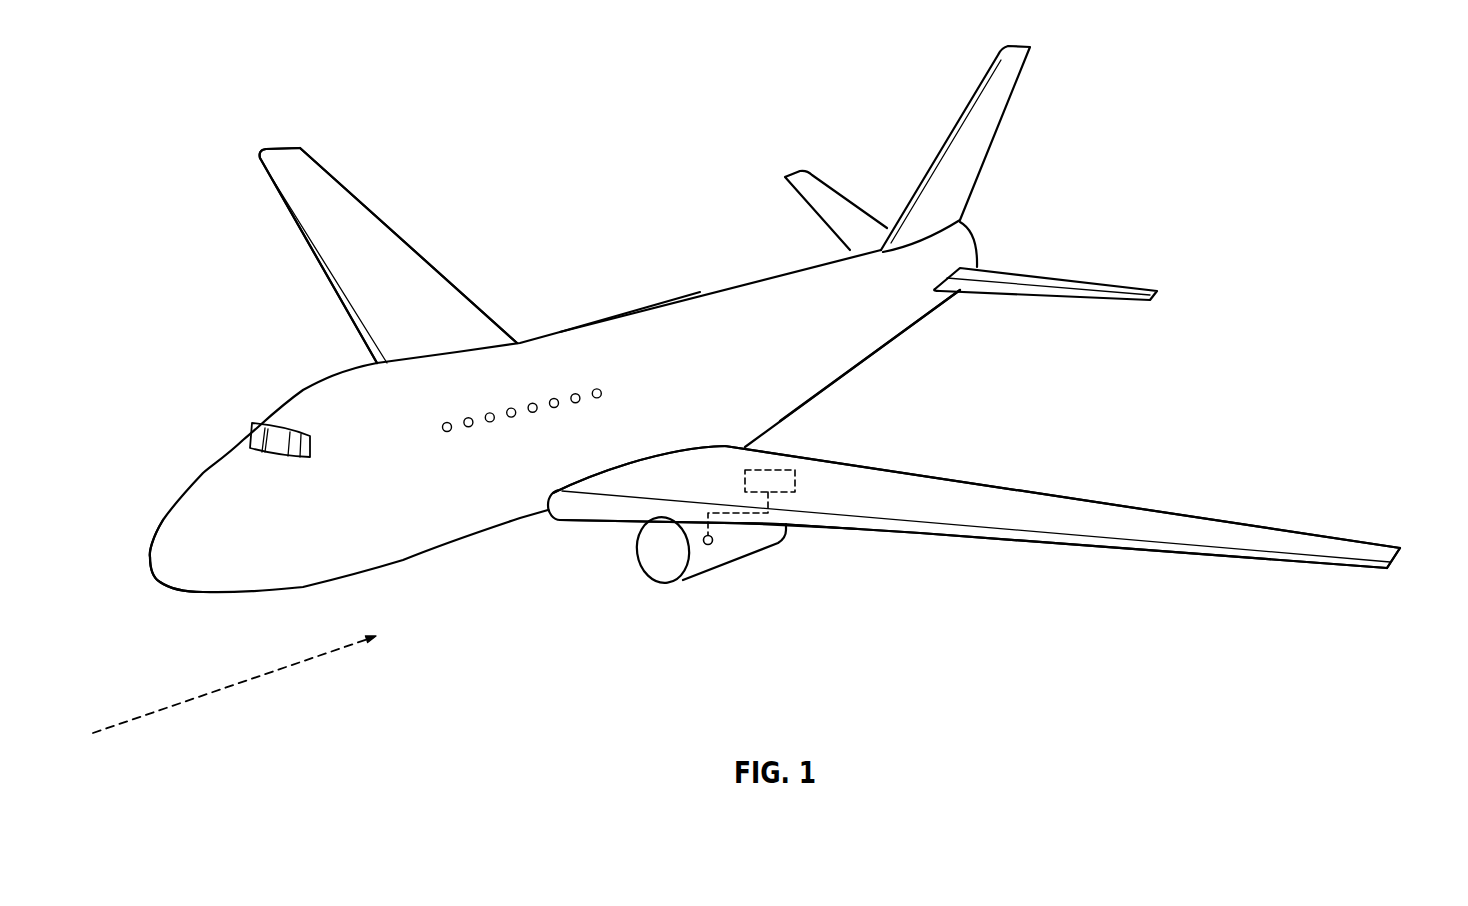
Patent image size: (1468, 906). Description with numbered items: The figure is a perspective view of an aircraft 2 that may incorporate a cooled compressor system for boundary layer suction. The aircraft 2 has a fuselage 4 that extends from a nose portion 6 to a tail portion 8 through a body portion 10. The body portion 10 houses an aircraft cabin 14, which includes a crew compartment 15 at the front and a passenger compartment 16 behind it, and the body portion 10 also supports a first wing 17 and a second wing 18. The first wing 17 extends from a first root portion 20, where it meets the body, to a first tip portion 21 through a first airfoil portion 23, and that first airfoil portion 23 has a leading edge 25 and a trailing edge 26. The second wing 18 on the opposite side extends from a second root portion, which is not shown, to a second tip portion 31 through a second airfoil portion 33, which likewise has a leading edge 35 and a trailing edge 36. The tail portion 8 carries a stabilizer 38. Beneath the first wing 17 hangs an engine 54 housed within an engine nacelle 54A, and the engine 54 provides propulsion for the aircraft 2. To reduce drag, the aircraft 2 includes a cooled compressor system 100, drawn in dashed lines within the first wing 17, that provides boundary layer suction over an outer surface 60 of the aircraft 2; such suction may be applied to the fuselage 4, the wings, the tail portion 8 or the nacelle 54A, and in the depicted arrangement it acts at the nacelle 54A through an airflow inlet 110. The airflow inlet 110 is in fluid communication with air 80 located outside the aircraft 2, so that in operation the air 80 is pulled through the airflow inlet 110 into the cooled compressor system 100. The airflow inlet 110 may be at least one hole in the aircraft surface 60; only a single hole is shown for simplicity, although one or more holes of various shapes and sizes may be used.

The aircraft 2 is at (776, 370).
The fuselage 4 is at (318, 565).
The nose portion 6 is at (160, 563).
The tail portion 8 is at (971, 200).
The body portion 10 is at (788, 405).
The aircraft cabin 14 is at (562, 450).
The crew compartment 15 is at (255, 422).
The passenger compartment 16 is at (597, 348).
The first wing 17 is at (995, 545).
The second wing 18 is at (362, 229).
The first root portion 20 is at (650, 462).
The first tip portion 21 is at (1402, 557).
The first airfoil portion 23 is at (1005, 523).
The leading edge 25 is at (785, 515).
The trailing edge 26 is at (1027, 492).
The second tip portion 31 is at (277, 152).
The second airfoil portion 33 is at (342, 198).
The leading edge 35 is at (273, 183).
The trailing edge 36 is at (368, 205).
The stabilizer 38 is at (1022, 260).
The engine 54 is at (657, 604).
The engine nacelle 54A is at (637, 555).
The outer surface 60 is at (663, 328).
The air 80 is at (230, 688).
The cooled compressor system 100 is at (797, 480).
The airflow inlet 110 is at (708, 546).